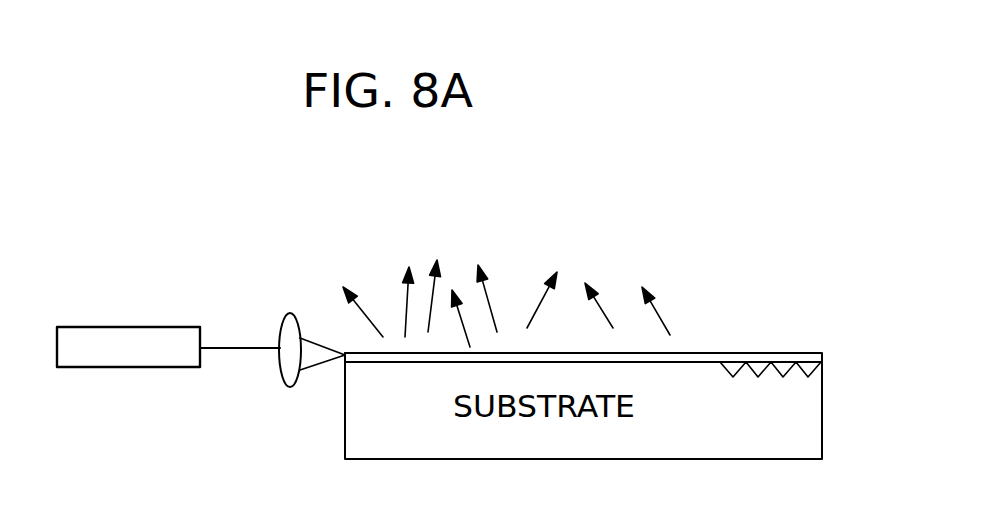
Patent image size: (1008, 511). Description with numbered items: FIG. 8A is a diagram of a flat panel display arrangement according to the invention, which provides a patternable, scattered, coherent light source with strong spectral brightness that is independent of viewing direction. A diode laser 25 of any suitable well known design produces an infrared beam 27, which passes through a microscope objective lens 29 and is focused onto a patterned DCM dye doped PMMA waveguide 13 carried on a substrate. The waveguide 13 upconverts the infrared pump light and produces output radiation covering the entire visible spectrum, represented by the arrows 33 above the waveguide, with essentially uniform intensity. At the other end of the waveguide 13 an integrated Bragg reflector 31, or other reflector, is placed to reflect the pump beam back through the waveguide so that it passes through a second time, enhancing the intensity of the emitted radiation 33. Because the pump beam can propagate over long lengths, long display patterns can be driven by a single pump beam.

The diode laser 25 is at (100, 326).
The infrared beam 27 is at (225, 355).
The microscope objective lens 29 is at (299, 318).
The arrows representing output radiation 33 is at (603, 277).
The patterned DCM dye doped PMMA waveguide 13 is at (782, 352).
The integrated Bragg reflector 31 is at (772, 382).